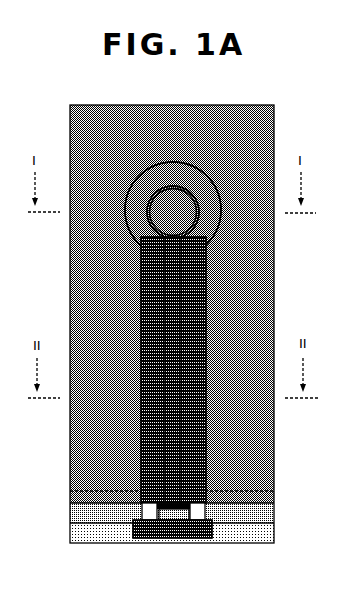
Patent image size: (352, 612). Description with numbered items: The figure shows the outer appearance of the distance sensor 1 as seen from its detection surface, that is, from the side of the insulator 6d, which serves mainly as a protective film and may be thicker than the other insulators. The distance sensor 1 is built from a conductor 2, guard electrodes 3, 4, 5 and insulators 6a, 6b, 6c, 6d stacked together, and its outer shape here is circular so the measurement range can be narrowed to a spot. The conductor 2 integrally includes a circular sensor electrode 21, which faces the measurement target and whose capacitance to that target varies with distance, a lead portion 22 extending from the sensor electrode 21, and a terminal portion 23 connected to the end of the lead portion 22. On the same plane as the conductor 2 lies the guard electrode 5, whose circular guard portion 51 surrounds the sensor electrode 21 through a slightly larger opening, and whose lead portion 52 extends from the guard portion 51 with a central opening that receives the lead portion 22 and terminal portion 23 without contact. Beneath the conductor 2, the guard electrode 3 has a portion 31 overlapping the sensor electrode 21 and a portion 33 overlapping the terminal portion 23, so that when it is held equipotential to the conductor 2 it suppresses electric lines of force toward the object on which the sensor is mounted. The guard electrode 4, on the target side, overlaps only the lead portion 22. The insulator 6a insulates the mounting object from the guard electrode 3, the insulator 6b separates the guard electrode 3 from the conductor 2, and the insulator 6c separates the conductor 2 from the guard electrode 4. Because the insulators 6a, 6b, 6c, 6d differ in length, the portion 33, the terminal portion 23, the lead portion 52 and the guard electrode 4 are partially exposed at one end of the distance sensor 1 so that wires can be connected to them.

The distance sensor 1 is at (178, 319).
The conductor 2 is at (148, 202).
The sensor electrode 21 is at (188, 188).
The lead portion 22 is at (183, 265).
The terminal portion 23 is at (169, 540).
The guard electrode 3 is at (126, 534).
The portion 31 is at (129, 229).
The portion 33 is at (138, 540).
The guard electrode 4 is at (141, 297).
The guard electrode 5 is at (203, 170).
The guard portion 51 is at (172, 163).
The lead portion 52 is at (196, 292).
The insulator 6a is at (73, 532).
The insulator 6b is at (274, 512).
The insulator 6c is at (73, 497).
The insulator 6d is at (113, 112).